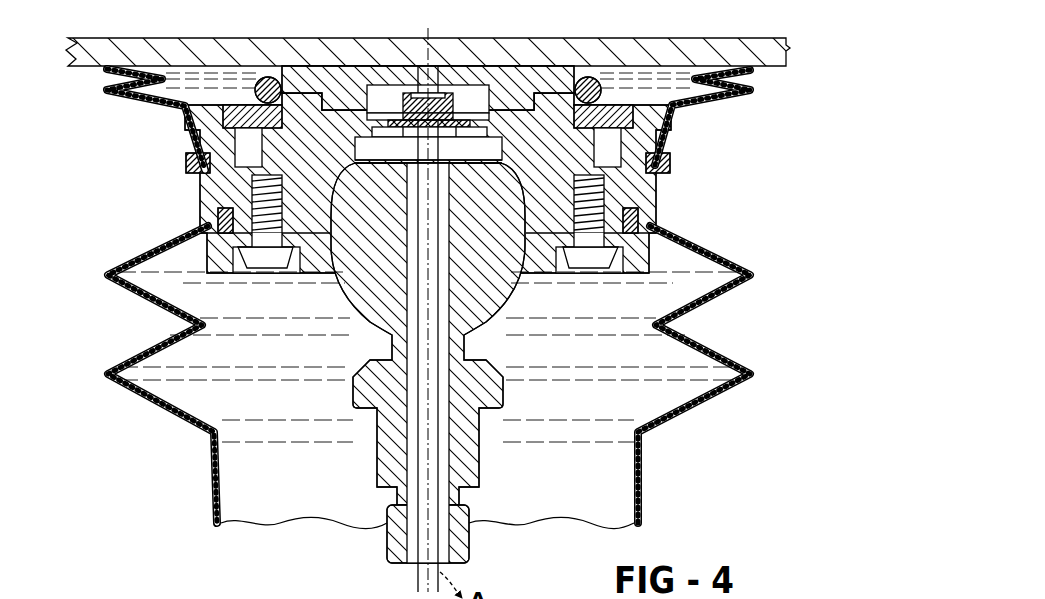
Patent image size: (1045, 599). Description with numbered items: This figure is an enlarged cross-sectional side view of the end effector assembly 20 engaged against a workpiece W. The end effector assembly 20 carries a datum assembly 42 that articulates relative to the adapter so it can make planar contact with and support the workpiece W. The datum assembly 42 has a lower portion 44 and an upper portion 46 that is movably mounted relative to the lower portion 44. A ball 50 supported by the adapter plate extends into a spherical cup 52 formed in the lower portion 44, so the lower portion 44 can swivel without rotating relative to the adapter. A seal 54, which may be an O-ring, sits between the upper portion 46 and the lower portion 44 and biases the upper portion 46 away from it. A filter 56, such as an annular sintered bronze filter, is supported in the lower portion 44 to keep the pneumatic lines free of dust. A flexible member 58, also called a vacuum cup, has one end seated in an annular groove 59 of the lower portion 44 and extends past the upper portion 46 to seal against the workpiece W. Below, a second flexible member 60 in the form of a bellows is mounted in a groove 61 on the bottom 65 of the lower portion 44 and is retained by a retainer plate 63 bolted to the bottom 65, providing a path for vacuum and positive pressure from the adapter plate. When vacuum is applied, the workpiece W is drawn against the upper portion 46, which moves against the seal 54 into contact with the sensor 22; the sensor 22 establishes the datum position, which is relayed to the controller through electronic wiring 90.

The end effector assembly 20 is at (88, 158).
The sensor 22 is at (440, 85).
The datum assembly 42 is at (690, 121).
The lower portion 44 is at (658, 188).
The upper portion 46 is at (350, 70).
The ball 50 is at (375, 308).
The spherical cup 52 is at (358, 162).
The seal 54 is at (250, 92).
The filter 56 is at (600, 112).
The flexible member 58 is at (143, 100).
The annular groove 59 is at (188, 164).
The flexible member 60 is at (734, 357).
The groove 61 is at (636, 213).
The retainer plate 63 is at (541, 266).
The bottom 65 is at (305, 242).
The electronic wiring 90 is at (406, 550).
The workpiece W is at (630, 52).